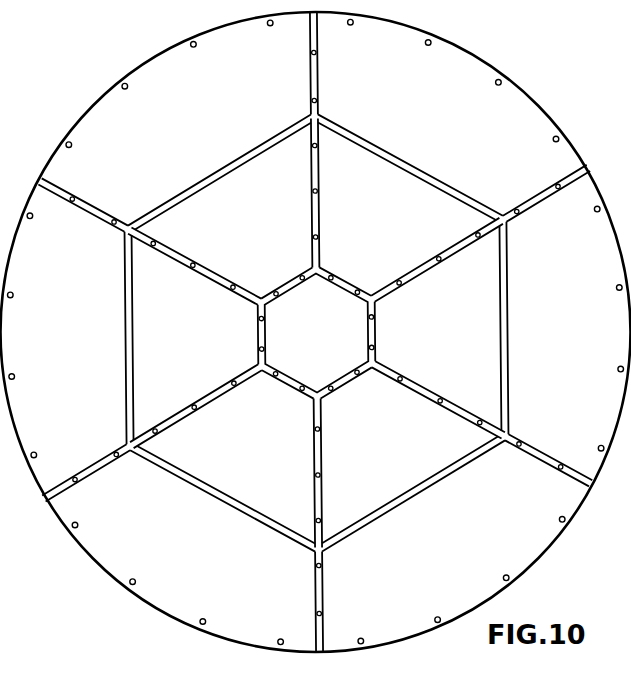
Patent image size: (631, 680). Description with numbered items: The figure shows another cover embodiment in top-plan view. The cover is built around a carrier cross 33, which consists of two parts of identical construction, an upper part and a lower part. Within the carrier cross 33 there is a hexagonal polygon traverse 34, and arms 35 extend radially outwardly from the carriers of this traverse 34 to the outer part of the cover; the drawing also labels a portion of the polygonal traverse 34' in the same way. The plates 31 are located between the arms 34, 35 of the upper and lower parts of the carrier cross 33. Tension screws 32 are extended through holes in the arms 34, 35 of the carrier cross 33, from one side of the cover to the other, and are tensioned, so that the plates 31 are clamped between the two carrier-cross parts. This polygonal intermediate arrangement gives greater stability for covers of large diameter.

The plates 31 is at (477, 152).
The tension screws 32 is at (521, 207).
The carrier cross 33 is at (423, 261).
The hexagonal polygon traverse 34 is at (352, 332).
The outer hexagonal frame 34' is at (347, 332).
The arms 35 is at (535, 443).